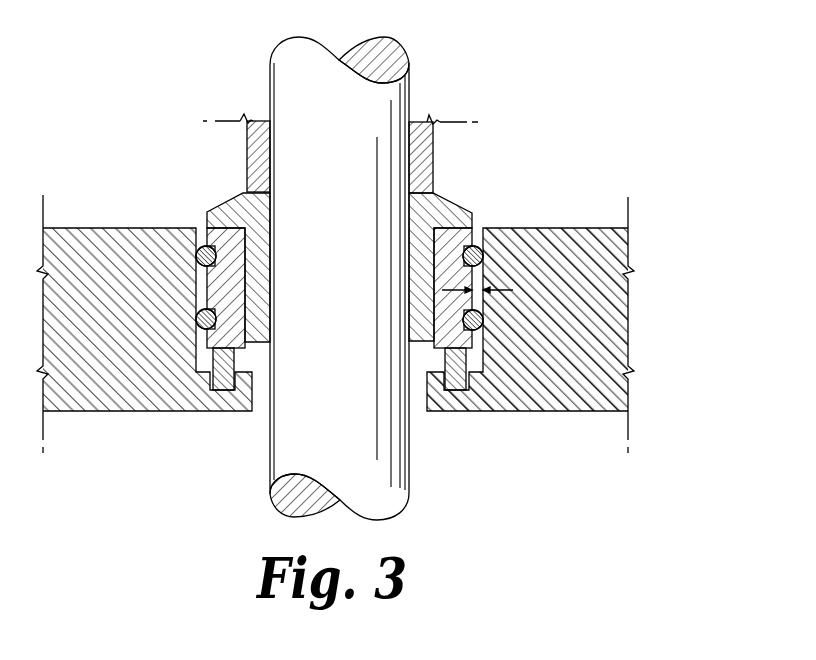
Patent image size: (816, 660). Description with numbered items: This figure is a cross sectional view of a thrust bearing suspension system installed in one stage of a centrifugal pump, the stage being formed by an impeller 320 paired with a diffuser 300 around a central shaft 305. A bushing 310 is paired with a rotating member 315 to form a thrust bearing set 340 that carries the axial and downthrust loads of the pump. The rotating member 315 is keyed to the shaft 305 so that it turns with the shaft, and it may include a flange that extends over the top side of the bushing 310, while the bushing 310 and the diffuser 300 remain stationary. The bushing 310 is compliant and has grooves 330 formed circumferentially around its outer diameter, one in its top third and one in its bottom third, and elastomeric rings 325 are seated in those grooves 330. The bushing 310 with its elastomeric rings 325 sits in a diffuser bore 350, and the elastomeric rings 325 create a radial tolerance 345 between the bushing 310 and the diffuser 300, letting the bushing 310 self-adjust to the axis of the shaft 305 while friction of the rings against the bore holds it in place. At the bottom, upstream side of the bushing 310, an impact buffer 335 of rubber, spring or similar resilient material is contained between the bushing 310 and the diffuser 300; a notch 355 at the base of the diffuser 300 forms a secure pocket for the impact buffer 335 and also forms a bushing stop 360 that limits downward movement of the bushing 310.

The diffuser 300 is at (577, 355).
The shaft 305 is at (305, 97).
The bushing 310 is at (473, 228).
The rotating member 315 is at (450, 202).
The impeller 320 is at (250, 150).
The elastomeric rings 325 is at (196, 258).
The grooves 330 is at (216, 262).
The impact buffer 335 is at (455, 383).
The thrust bearing set 340 is at (401, 250).
The radial tolerance 345 is at (513, 290).
The diffuser bore 350 is at (477, 342).
The notch 355 is at (240, 392).
The bushing stop 360 is at (243, 358).